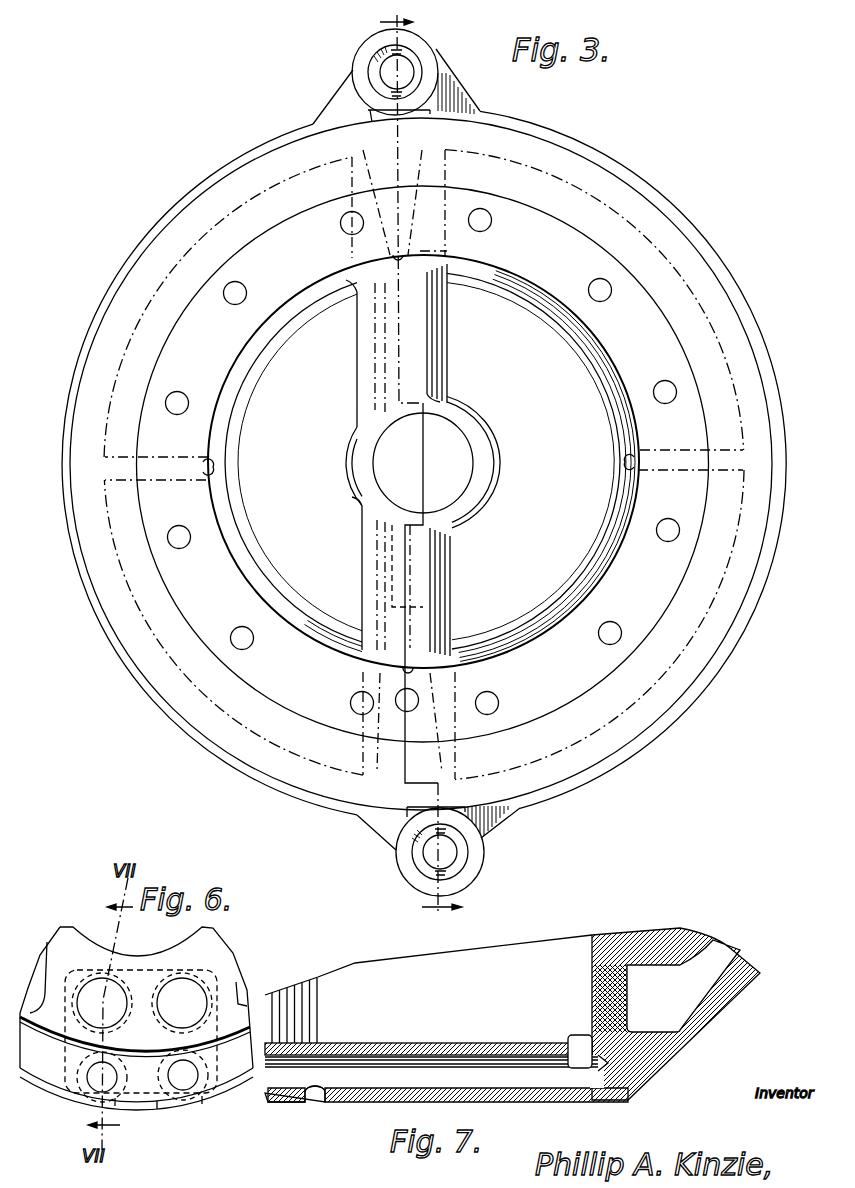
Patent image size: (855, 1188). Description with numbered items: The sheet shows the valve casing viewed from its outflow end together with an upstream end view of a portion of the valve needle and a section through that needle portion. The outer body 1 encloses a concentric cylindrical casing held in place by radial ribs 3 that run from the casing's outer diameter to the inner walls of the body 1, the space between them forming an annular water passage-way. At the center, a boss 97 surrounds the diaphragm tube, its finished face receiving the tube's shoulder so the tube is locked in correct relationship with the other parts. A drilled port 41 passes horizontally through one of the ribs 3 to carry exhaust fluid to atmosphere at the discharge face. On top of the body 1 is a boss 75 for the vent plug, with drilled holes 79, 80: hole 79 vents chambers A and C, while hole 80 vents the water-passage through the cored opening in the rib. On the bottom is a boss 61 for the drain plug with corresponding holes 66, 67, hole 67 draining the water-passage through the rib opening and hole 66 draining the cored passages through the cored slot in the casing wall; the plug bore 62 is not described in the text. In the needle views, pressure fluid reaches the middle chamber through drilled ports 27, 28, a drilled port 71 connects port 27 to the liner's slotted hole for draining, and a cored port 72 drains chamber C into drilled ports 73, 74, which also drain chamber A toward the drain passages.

In FIG. 3, the body 1 is at (677, 213).
In FIG. 3, the radial ribs 3 is at (447, 283).
In FIG. 3, the boss 97 is at (474, 425).
In FIG. 3, the drilled port 41 is at (394, 697).
In FIG. 3, the boss 75 is at (352, 76).
In FIG. 3, the drilled hole 79 is at (405, 60).
In FIG. 3, the drilled hole 80 is at (393, 50).
In FIG. 3, the boss 61 is at (396, 852).
In FIG. 3, the lug bore 62 is at (421, 857).
In FIG. 3, the hole 66 is at (447, 835).
In FIG. 3, the hole 67 is at (455, 822).
In FIG. 6, the drilled port 28 is at (177, 1046).
In FIG. 6, the drilled port 73 is at (93, 1079).
In FIG. 7, the drilled port 73 is at (458, 1053).
In FIG. 6, the drilled port 74 is at (113, 1100).
In FIG. 7, the drilled port 74 is at (318, 1103).
In FIG. 6, the drilled port 71 is at (160, 1093).
In FIG. 6, the drilled port 27 is at (188, 1087).
In FIG. 7, the cored port 72 is at (576, 1037).